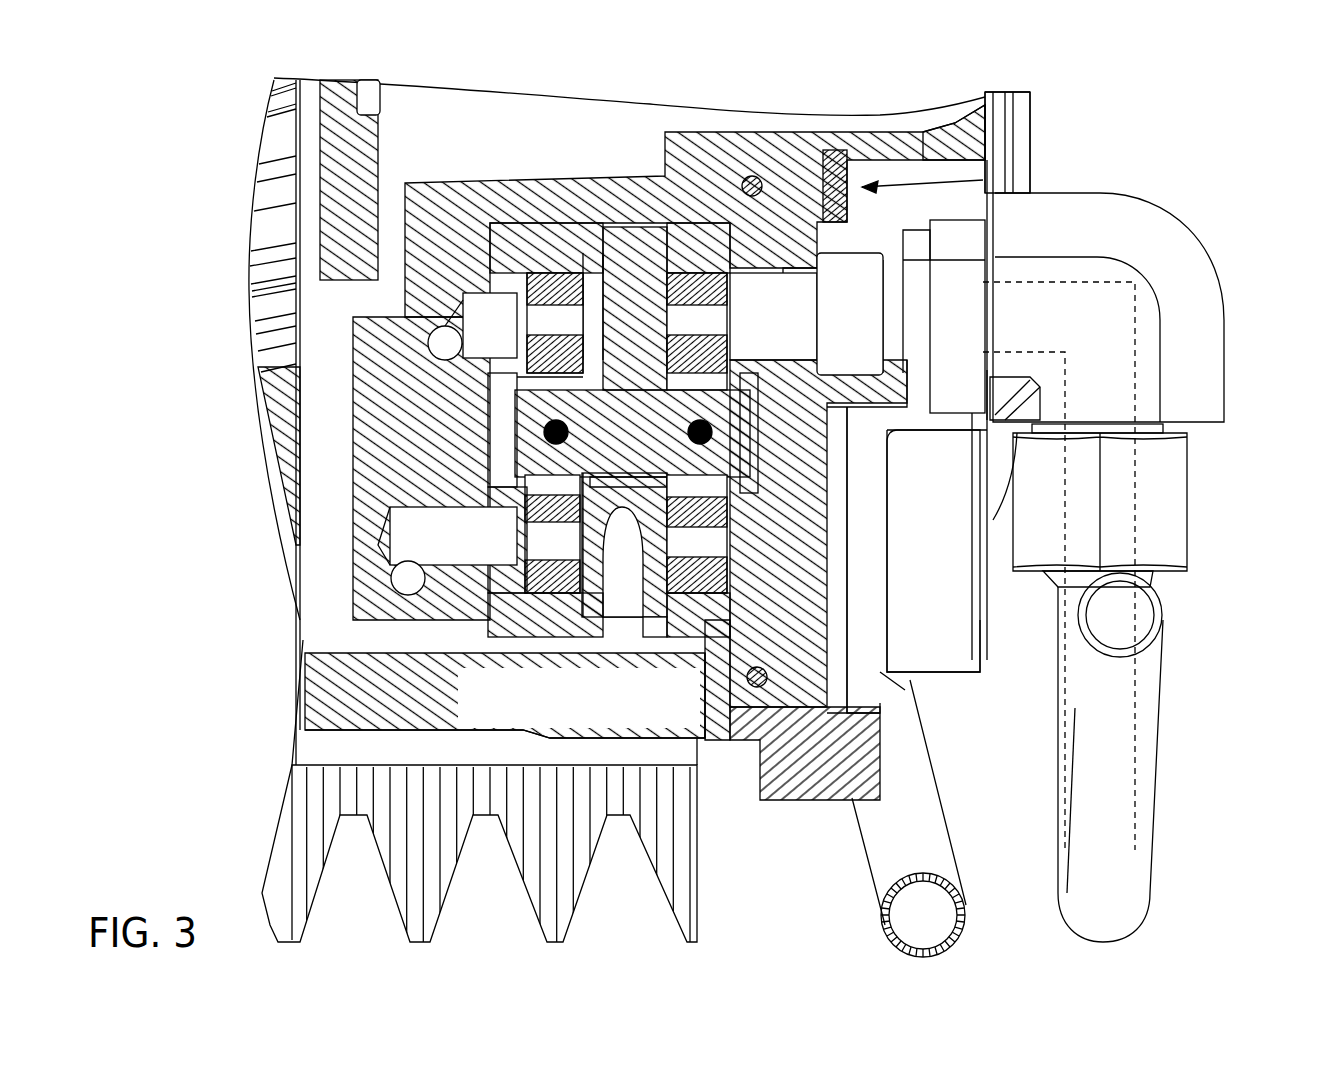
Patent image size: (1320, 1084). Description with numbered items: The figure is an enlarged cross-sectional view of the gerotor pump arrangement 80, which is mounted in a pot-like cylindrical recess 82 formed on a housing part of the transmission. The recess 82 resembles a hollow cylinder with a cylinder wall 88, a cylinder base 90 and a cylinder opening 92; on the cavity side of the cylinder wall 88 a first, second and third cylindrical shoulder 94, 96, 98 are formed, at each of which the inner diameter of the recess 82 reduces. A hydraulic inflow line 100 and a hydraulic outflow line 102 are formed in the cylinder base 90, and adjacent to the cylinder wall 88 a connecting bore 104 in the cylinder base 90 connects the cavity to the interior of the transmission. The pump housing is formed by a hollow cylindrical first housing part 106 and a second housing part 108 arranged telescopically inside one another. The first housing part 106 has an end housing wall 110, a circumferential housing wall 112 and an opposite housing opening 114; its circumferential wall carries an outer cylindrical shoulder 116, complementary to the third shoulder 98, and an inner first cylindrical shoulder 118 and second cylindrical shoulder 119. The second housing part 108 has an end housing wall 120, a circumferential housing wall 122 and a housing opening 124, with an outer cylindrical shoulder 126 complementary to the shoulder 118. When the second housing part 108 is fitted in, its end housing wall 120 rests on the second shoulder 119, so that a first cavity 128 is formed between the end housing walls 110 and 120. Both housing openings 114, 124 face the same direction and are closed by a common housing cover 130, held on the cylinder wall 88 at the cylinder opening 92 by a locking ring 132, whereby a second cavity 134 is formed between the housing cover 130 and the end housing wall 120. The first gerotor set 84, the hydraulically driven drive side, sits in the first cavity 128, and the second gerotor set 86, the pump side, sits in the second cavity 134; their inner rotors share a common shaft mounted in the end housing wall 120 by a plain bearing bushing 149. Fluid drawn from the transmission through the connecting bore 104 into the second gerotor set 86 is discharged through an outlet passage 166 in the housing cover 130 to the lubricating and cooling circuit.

The gerotor pump arrangement 80 is at (1198, 102).
The pot-like cylindrical recess 82 is at (993, 190).
The first gerotor set 84 is at (543, 578).
The second gerotor set 86 is at (690, 585).
The cylinder wall 88 is at (620, 200).
The cylinder base 90 is at (520, 330).
The cylinder opening 92 is at (986, 170).
The first cylindrical shoulder 94 is at (830, 205).
The second cylindrical shoulder 96 is at (750, 176).
The third cylindrical shoulder 98 is at (683, 205).
The hydraulic inflow line 100 is at (440, 530).
The hydraulic outflow line 102 is at (540, 388).
The connecting bore 104 is at (352, 640).
The first housing part 106 is at (603, 262).
The second housing part 108 is at (520, 258).
The end housing wall 110 is at (545, 434).
The circumferential housing wall 112 is at (527, 158).
The housing opening 114 is at (845, 187).
The cylindrical shoulder 116 is at (596, 200).
The first cylindrical shoulder 118 is at (668, 626).
The second cylindrical shoulder 119 is at (585, 593).
The end housing wall 120 is at (540, 280).
The circumferential housing wall 122 is at (702, 620).
The housing opening 124 is at (719, 573).
The cylindrical shoulder 126 is at (640, 620).
The first cavity 128 is at (745, 230).
The housing cover 130 is at (813, 690).
The locking ring 132 is at (925, 130).
The second cavity 134 is at (722, 513).
The plain bearing bushing 149 is at (520, 400).
The outlet passage 166 is at (851, 360).